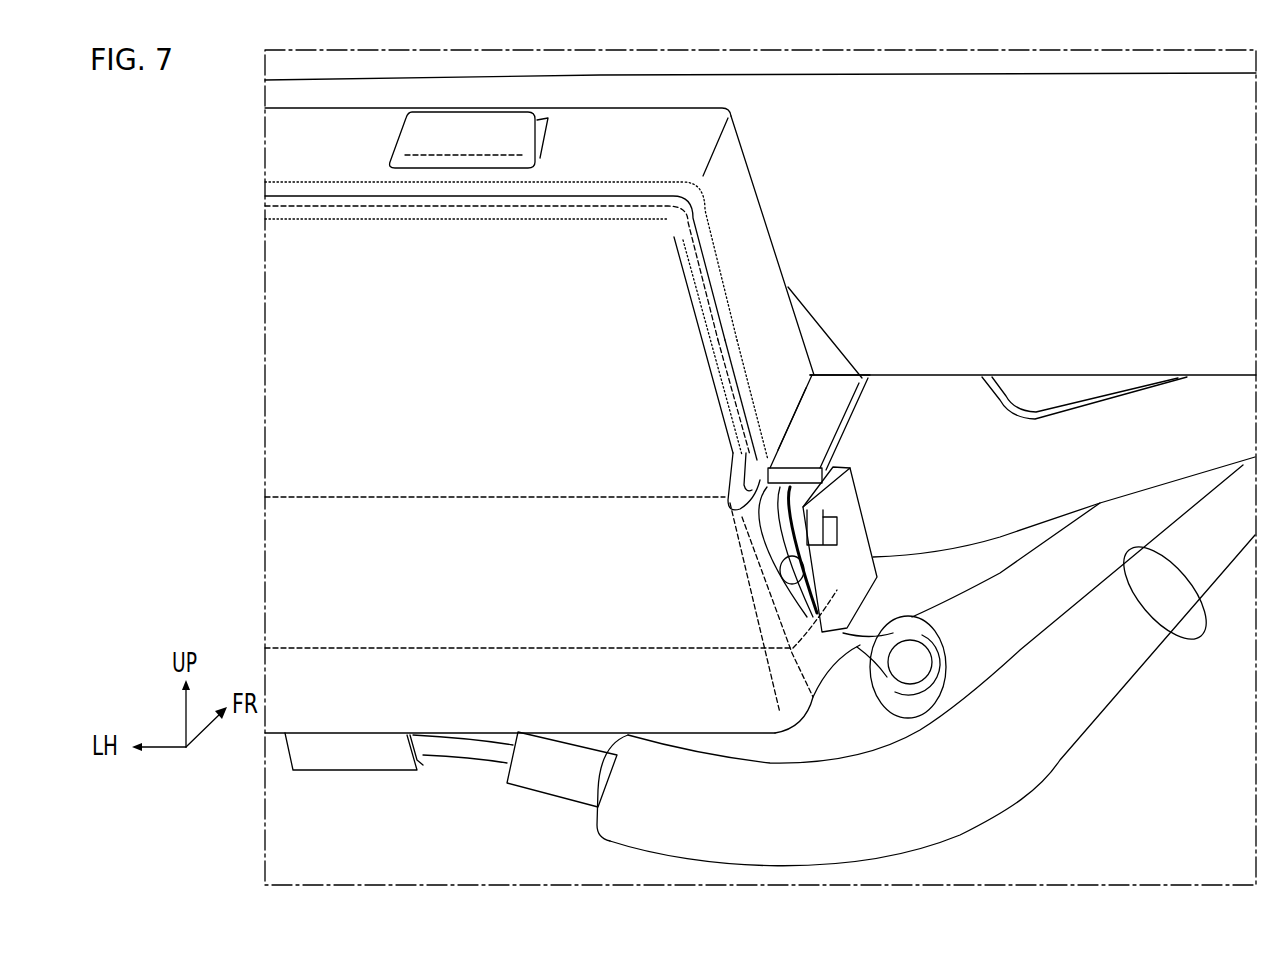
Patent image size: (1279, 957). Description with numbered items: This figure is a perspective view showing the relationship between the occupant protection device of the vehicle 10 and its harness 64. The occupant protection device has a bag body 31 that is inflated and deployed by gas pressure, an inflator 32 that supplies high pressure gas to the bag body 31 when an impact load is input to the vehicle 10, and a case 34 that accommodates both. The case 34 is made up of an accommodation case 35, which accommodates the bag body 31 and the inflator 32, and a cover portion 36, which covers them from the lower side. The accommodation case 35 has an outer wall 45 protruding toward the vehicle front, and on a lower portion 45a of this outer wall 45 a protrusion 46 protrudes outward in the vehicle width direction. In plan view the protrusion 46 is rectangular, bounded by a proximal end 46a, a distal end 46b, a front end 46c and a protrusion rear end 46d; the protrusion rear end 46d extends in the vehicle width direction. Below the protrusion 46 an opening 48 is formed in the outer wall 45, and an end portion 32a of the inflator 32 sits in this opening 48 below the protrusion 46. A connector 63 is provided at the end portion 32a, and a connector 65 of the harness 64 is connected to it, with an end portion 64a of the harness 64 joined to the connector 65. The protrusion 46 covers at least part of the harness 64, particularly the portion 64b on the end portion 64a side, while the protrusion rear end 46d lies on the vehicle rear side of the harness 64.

The vehicle 10 is at (258, 88).
The bag body 31 is at (700, 238).
The inflator 32 is at (493, 650).
The end portion of the inflator 32a is at (813, 700).
The case 34 is at (177, 112).
The accommodation case 35 is at (329, 137).
The cover portion 36 is at (313, 278).
The outer wall 45 is at (758, 283).
The lower portion of the outer wall 45a is at (819, 648).
The protrusion 46 is at (843, 390).
The proximal end 46a is at (793, 420).
The distal end 46b is at (837, 422).
The front end 46c is at (837, 373).
The protrusion rear end 46d is at (797, 467).
The opening 48 is at (797, 588).
The connector of the inflator 63 is at (783, 530).
The harness 64 is at (1037, 620).
The end portion of the harness 64a is at (877, 622).
The portion of the harness 64b is at (925, 628).
The connector of the harness 65 is at (857, 543).